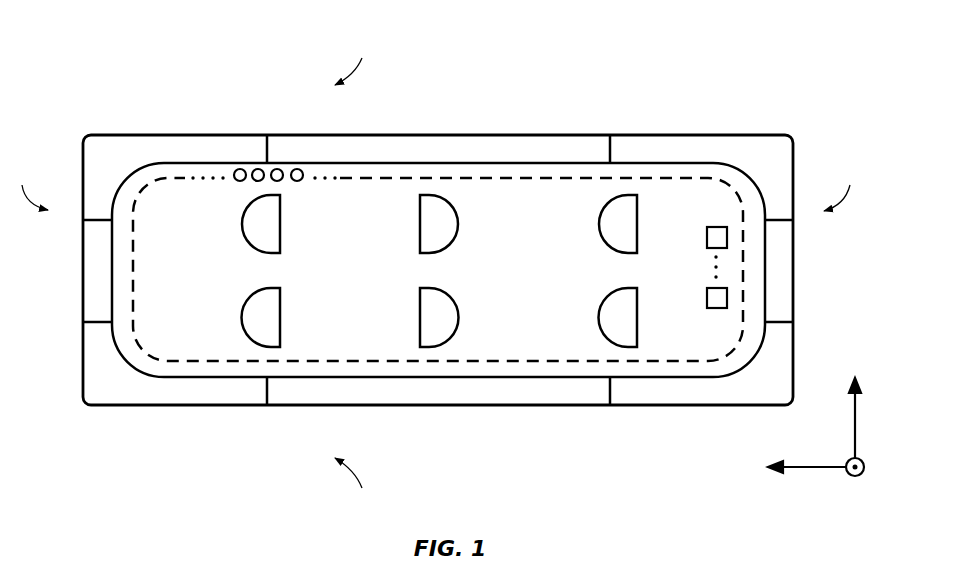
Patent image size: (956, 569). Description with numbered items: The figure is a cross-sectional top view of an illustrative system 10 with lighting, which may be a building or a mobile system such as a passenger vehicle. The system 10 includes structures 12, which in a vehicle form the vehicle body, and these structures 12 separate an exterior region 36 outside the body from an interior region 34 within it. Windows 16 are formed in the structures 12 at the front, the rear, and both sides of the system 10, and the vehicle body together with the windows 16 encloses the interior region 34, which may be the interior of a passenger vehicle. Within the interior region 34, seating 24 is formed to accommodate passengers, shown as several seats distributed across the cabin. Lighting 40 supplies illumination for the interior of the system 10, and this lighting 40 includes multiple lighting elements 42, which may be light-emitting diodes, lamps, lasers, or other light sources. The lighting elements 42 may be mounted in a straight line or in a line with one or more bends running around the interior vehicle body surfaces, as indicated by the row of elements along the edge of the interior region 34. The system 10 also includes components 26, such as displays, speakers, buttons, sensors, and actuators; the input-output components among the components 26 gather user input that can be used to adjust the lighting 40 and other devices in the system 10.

The system 10 is at (597, 87).
The structures 12 is at (773, 147).
The windows 16 is at (447, 148).
The seating 24 is at (598, 313).
The components 26 is at (707, 297).
The interior region 34 is at (200, 335).
The exterior region 36 is at (58, 404).
The lighting 40 is at (240, 197).
The lighting elements 42 is at (258, 168).